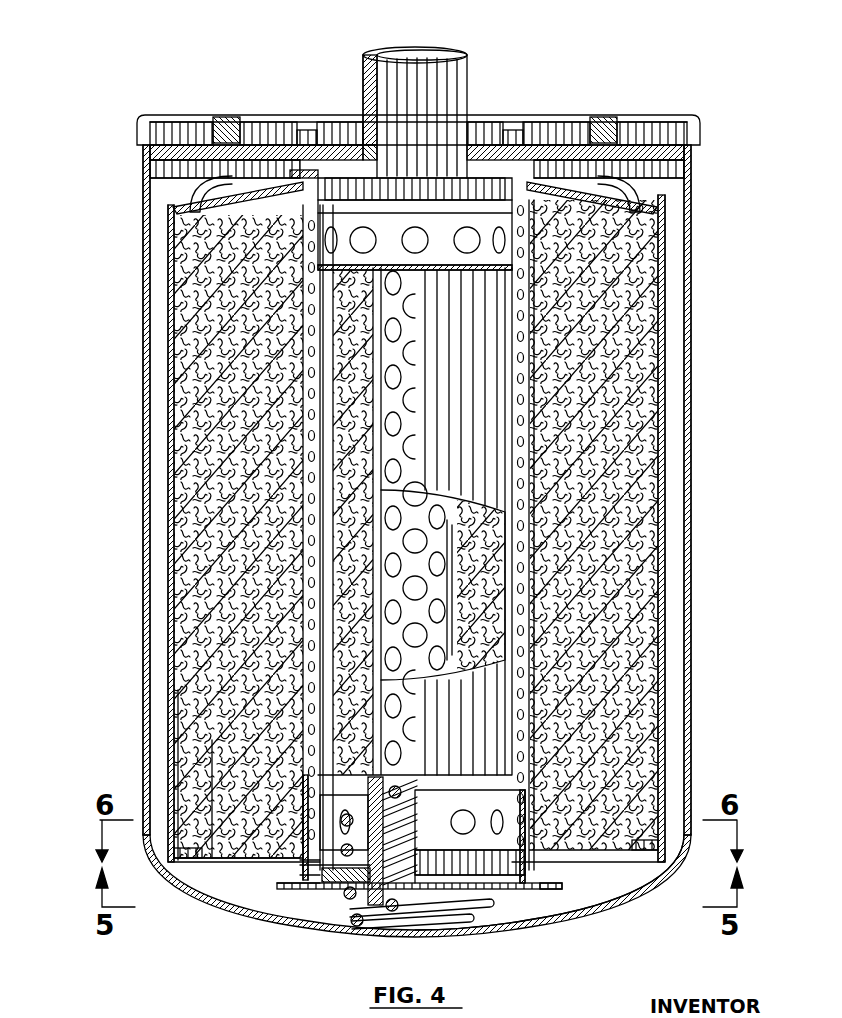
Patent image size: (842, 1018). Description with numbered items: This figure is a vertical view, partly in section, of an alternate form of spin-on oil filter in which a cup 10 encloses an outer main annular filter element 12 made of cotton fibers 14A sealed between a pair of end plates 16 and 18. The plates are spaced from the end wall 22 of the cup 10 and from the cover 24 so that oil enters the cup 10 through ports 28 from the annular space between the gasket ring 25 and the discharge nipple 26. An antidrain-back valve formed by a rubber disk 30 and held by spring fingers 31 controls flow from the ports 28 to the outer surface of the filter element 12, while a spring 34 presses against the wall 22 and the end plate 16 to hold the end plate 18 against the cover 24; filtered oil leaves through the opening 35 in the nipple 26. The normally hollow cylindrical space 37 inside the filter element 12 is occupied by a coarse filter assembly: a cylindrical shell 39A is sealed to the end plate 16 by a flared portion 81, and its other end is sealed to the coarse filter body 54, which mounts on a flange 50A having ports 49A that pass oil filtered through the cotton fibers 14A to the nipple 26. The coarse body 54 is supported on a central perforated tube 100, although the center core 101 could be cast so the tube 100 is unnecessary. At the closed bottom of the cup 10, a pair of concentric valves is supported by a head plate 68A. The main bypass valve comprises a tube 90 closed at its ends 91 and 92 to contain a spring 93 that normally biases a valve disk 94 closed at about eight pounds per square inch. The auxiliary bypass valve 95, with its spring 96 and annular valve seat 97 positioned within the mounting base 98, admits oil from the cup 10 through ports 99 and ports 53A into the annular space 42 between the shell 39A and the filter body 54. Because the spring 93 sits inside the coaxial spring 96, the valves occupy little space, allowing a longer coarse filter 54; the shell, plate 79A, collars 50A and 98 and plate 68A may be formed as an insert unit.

The cup 10 is at (690, 450).
The main annular filter element 12 is at (672, 521).
The cotton fibers 14A is at (623, 580).
The end plate 16 is at (597, 863).
The end plate 18 is at (640, 193).
The end wall 22 is at (548, 913).
The cover 24 is at (700, 148).
The gasket ring 25 is at (237, 115).
The discharge nipple 26 is at (470, 66).
The ports 28 is at (310, 146).
The rubber disk 30 is at (690, 162).
The spring fingers 31 is at (285, 187).
The spring 34 is at (492, 906).
The opening 35 is at (365, 150).
The cylindrical space 37 is at (303, 543).
The cylindrical shell 39A is at (313, 596).
The annular space 42 is at (330, 523).
The ports 49A is at (320, 236).
The flange 50A is at (320, 260).
The ports 53A is at (330, 890).
The filter body 54 is at (340, 470).
The head plate 68A is at (553, 888).
The plate 79A is at (297, 177).
The flared portion 81 is at (212, 748).
The tube 90 is at (297, 887).
The end 91 is at (385, 897).
The end 92 is at (178, 697).
The spring 93 is at (408, 872).
The valve disk 94 is at (402, 873).
The auxiliary bypass valve 95 is at (362, 822).
The spring 96 is at (185, 778).
The annular valve seat 97 is at (340, 892).
The mounting base 98 is at (520, 823).
The ports 99 is at (470, 810).
The central perforated tube 100 is at (350, 392).
The center core 101 is at (390, 633).